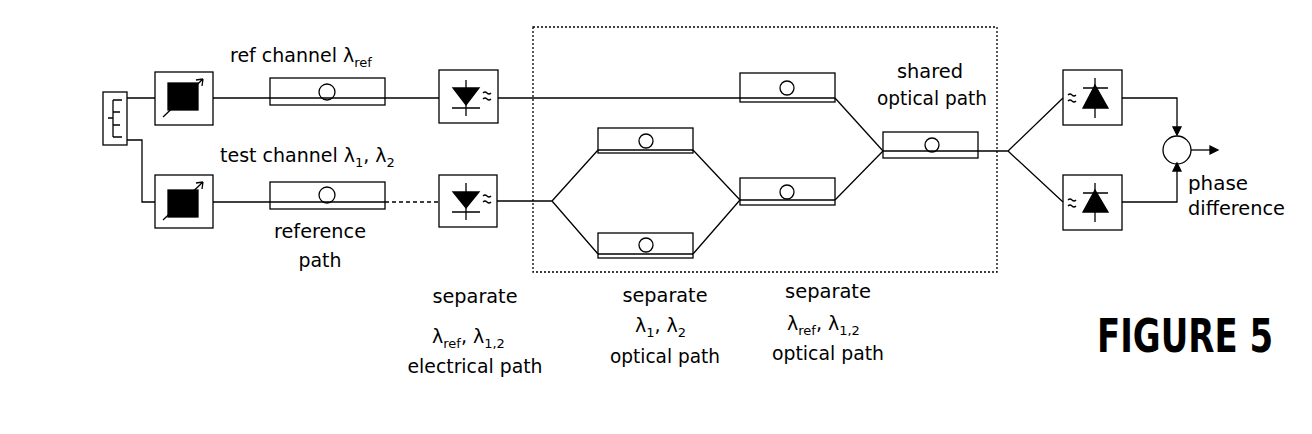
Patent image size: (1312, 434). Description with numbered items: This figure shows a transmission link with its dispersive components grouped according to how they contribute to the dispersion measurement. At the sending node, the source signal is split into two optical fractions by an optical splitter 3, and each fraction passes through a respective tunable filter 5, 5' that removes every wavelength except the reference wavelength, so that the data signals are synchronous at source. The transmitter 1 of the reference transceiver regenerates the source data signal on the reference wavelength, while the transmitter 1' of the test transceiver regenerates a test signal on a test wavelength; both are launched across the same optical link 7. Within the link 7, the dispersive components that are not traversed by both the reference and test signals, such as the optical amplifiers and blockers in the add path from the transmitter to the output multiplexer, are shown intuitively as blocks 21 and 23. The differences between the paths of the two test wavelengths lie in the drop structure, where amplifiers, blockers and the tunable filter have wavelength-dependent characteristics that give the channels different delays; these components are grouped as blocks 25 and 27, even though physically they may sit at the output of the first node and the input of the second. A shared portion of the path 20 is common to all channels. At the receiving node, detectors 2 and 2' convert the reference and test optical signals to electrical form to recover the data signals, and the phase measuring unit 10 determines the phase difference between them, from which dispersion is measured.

The optical splitter 3 is at (113, 92).
The tunable filter 5 is at (193, 67).
The tunable filter 5' is at (184, 243).
The transmitter 1 is at (468, 76).
The transmitter 1' is at (446, 219).
The optical link 7 is at (580, 66).
The block of dispersive components 21 is at (768, 73).
The block of dispersive components 25 is at (645, 154).
The block of dispersive components 27 is at (622, 232).
The block of dispersive components 23 is at (790, 206).
The shared optical path 20 is at (943, 158).
The detector 2 is at (1119, 78).
The detector 2' is at (1068, 231).
The phase measuring unit 10 is at (1193, 140).